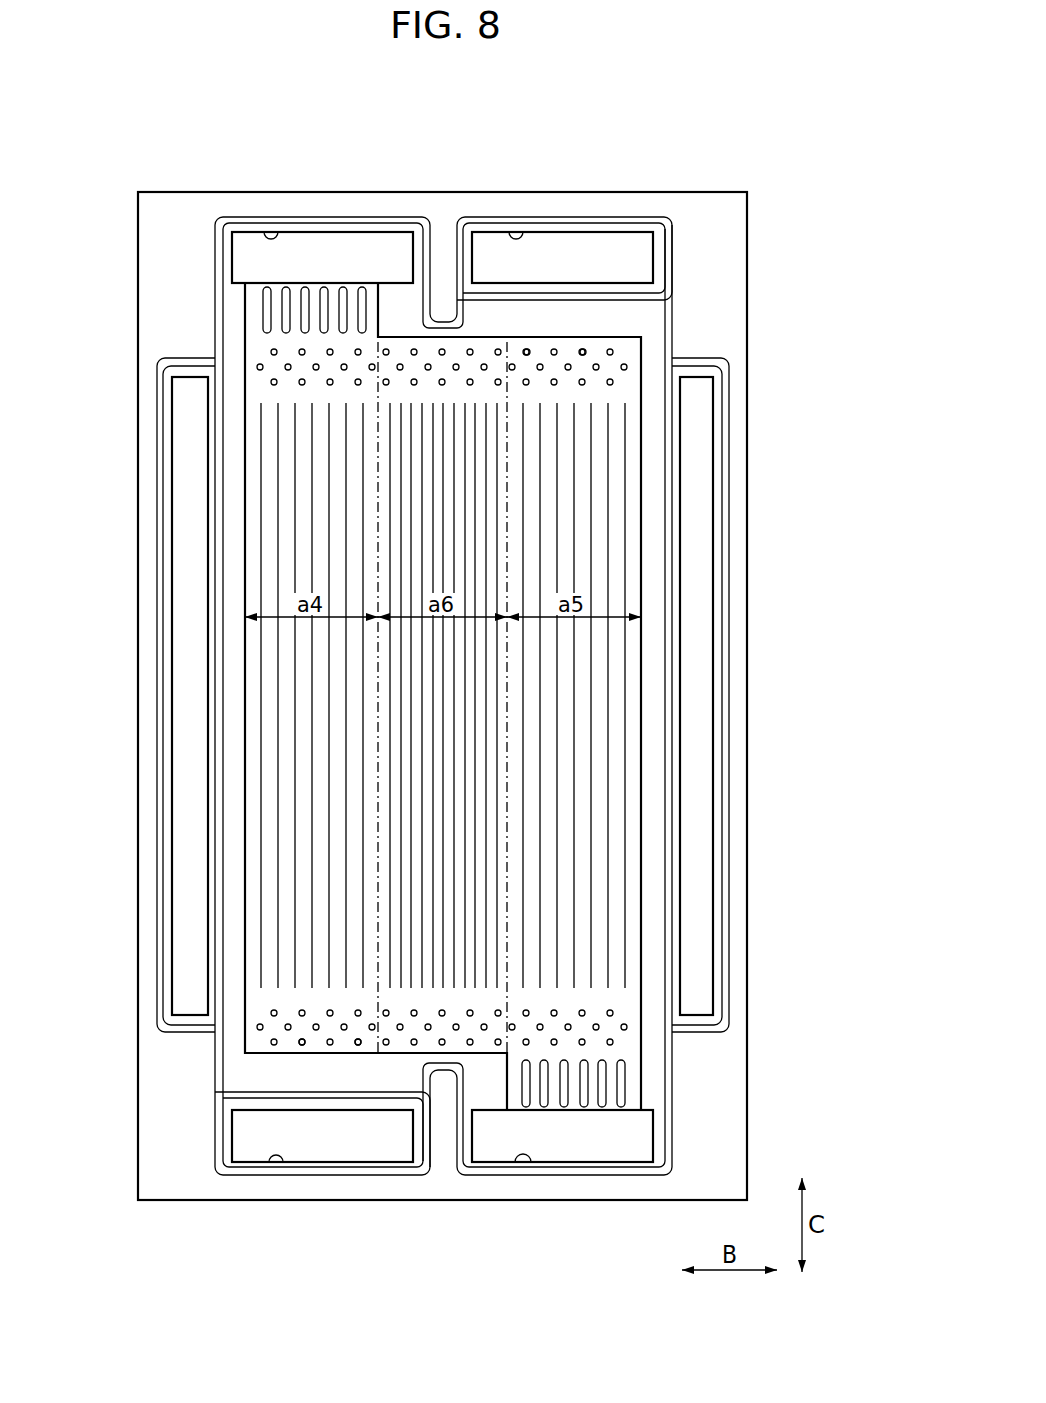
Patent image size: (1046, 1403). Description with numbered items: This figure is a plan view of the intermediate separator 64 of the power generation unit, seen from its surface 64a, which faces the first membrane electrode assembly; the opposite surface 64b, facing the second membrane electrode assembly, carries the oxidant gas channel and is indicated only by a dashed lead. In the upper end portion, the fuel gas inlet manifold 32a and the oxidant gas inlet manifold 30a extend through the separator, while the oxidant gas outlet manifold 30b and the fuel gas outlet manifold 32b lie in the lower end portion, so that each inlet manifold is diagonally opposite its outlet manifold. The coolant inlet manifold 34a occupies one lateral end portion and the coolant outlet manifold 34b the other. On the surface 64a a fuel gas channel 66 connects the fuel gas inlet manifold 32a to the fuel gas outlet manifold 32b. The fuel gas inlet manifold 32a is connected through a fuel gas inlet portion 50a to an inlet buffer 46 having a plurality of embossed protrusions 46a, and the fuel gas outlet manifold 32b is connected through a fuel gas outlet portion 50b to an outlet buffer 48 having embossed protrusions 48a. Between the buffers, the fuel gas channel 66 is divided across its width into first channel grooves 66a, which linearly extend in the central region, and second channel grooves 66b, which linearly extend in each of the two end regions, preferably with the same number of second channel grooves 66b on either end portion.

The intermediate separator 64 is at (536, 86).
The surface of the intermediate separator 64a is at (722, 1132).
The surface of the intermediate separator 64b is at (727, 1160).
The fuel gas inlet manifold 32a is at (278, 233).
The oxidant gas inlet manifold 30a is at (523, 233).
The oxidant gas outlet manifold 30b is at (268, 1160).
The fuel gas outlet manifold 32b is at (516, 1160).
The coolant inlet manifold 34a is at (695, 485).
The coolant outlet manifold 34b is at (190, 767).
The fuel gas inlet portion 50a is at (275, 313).
The fuel gas outlet portion 50b is at (612, 1079).
The inlet buffer 46 is at (593, 352).
The embossed protrusions 46a is at (584, 349).
The outlet buffer 48 is at (290, 1040).
The embossed protrusions 48a is at (358, 1045).
The fuel gas channel 66 is at (620, 738).
The first channel grooves 66a is at (465, 800).
The second channel grooves 66b is at (607, 787).